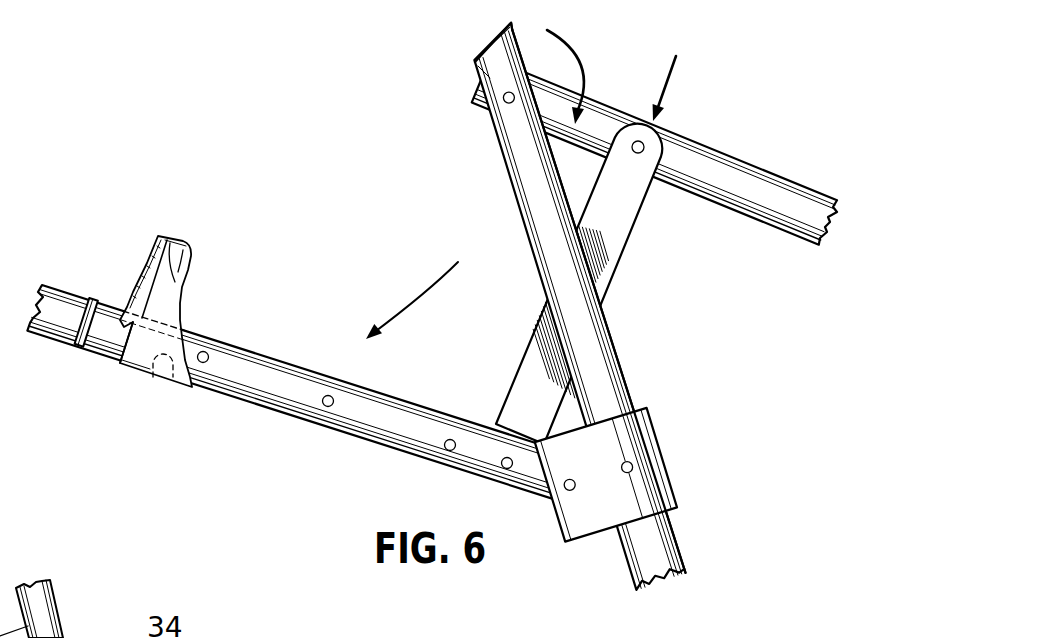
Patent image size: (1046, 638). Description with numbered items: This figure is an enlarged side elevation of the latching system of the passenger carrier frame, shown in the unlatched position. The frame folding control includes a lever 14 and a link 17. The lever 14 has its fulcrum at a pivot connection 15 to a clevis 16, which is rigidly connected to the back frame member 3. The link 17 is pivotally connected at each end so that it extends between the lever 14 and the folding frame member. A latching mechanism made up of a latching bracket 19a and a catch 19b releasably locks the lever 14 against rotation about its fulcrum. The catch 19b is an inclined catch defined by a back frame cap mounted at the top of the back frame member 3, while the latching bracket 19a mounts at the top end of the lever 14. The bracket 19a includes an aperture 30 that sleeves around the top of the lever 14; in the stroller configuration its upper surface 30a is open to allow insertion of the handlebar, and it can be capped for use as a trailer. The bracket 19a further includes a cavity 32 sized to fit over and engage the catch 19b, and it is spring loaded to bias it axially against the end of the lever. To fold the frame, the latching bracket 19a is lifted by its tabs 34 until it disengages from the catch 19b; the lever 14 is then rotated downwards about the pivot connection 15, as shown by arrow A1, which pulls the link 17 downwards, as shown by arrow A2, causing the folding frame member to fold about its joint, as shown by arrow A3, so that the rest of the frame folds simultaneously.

The back frame member 3 is at (615, 362).
The lever 14 is at (333, 428).
The pivot connection 15 is at (573, 489).
The clevis 16 is at (656, 440).
The link 17 is at (623, 215).
The latching bracket 19a is at (126, 367).
The catch 19b is at (490, 44).
The aperture 30 is at (167, 378).
The upper surface 30a is at (63, 327).
The cavity 32 is at (190, 290).
The tabs 34 is at (128, 308).
The arrow A1 is at (458, 262).
The arrow A2 is at (676, 62).
The arrow A3 is at (583, 73).